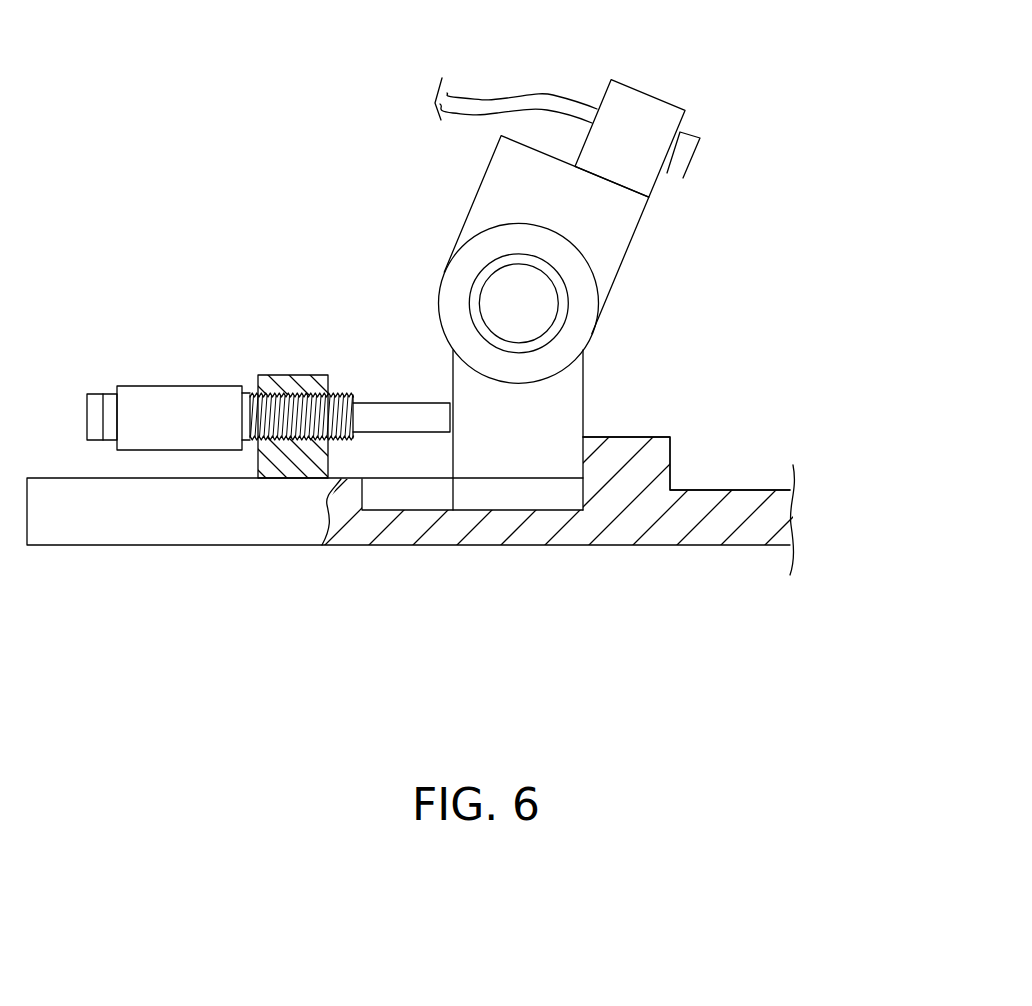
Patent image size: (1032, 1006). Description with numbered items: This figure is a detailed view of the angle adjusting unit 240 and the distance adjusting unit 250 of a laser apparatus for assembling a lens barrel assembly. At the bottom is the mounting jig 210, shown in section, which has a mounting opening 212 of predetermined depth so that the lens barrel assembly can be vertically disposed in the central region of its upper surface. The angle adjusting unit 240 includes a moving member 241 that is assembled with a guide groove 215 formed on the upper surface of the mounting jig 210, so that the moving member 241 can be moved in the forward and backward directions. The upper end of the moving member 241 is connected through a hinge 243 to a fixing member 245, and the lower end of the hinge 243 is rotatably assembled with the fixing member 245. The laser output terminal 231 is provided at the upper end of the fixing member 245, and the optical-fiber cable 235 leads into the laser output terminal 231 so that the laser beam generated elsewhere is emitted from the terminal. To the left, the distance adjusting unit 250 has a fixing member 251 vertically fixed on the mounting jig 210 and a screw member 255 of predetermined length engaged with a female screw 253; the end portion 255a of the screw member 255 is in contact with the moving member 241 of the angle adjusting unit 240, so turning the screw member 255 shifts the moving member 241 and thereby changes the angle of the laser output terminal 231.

The mounting jig 210 is at (657, 535).
The mounting opening 212 is at (707, 490).
The guide groove 215 is at (431, 507).
The laser output terminal 231 is at (662, 114).
The optical-fiber cable 235 is at (517, 96).
The angle adjusting unit 240 is at (820, 279).
The moving member 241 is at (573, 408).
The hinge 243 is at (583, 325).
The fixing member 245 is at (613, 240).
The distance adjusting unit 250 is at (270, 174).
The fixing member 251 is at (293, 375).
The female screw 253 is at (252, 394).
The screw member 255 is at (163, 393).
The adjusting rod 255a is at (405, 403).